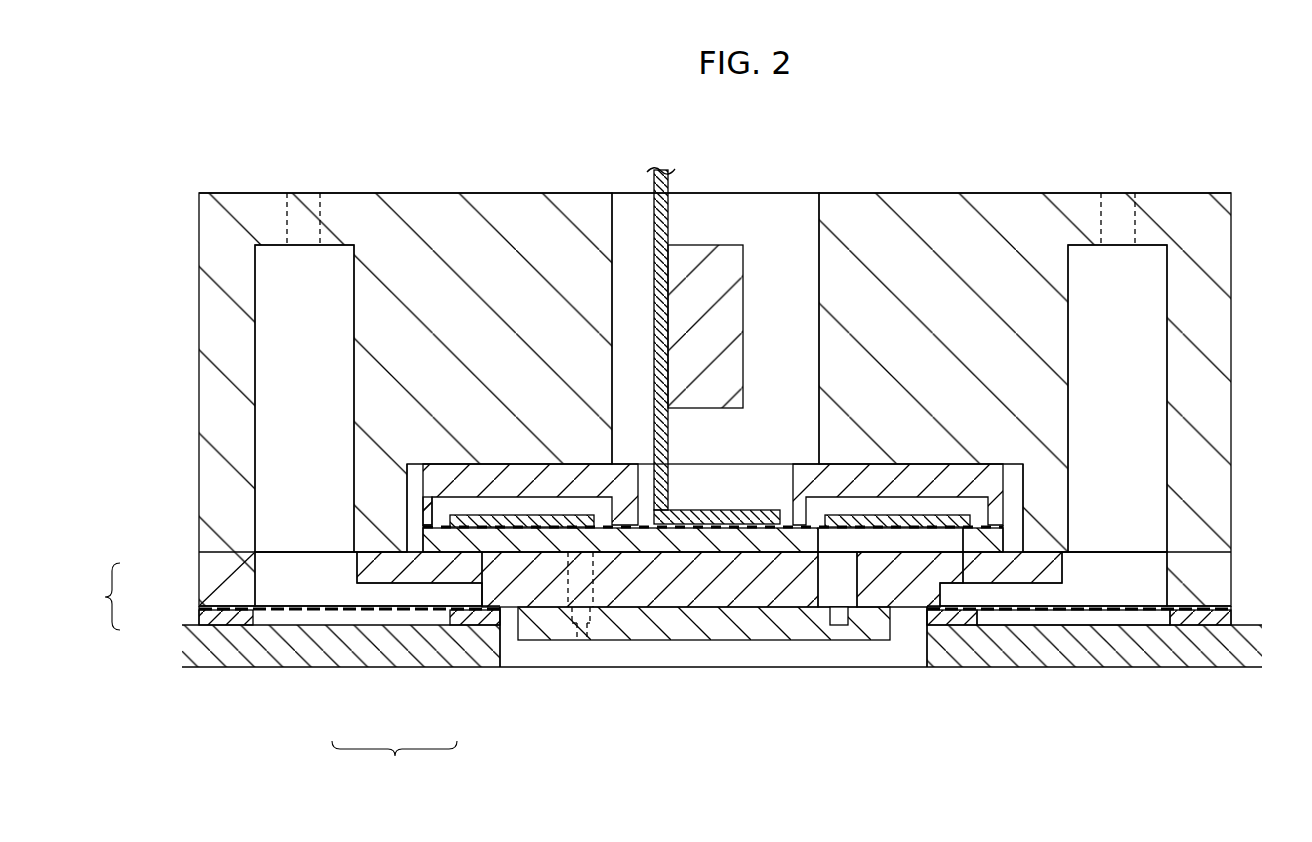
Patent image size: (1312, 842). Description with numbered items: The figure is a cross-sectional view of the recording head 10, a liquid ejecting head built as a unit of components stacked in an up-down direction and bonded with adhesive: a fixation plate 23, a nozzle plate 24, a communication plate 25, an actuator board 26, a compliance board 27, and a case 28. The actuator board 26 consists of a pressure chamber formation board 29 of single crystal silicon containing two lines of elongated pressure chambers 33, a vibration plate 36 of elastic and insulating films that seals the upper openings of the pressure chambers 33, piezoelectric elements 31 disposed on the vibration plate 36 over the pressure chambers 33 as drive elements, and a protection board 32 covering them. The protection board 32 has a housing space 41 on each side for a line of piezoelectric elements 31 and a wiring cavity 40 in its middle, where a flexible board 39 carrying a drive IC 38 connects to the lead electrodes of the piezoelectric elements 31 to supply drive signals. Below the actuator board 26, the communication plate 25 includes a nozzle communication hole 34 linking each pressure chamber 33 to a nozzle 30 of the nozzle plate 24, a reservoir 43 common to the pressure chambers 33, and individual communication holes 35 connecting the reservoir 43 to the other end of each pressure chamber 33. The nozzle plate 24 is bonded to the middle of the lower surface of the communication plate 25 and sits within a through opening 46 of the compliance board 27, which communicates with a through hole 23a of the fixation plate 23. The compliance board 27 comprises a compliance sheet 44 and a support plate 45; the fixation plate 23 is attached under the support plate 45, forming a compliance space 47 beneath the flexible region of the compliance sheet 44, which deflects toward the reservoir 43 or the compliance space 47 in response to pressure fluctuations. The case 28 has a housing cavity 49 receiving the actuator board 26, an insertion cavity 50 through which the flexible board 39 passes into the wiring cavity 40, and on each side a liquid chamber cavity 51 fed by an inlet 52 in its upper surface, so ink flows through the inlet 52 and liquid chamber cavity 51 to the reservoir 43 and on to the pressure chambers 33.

The recording head 10 is at (200, 181).
The fixation plate 23 is at (244, 655).
The through hole 23a is at (885, 655).
The nozzle plate 24 is at (639, 627).
The communication plate 25 is at (690, 590).
The actuator board 26 is at (394, 761).
The compliance board 27 is at (99, 596).
The case 28 is at (215, 323).
The pressure chamber formation board 29 is at (440, 538).
The nozzle 30 is at (839, 627).
The piezoelectric element 31 is at (497, 520).
The protection board 32 is at (441, 488).
The pressure chamber 33 is at (891, 540).
The nozzle communication hole 34 is at (835, 578).
The individual communication hole 35 is at (950, 573).
The vibration plate 36 is at (977, 530).
The drive IC 38 is at (725, 265).
The flexible board 39 is at (653, 267).
The wiring cavity 40 is at (717, 487).
The housing space 41 is at (477, 512).
The reservoir 43 is at (288, 577).
The compliance sheet 44 is at (200, 607).
The support plate 45 is at (212, 611).
The through opening 46 is at (507, 640).
The compliance space 47 is at (1135, 618).
The housing cavity 49 is at (1013, 487).
The insertion cavity 50 is at (787, 320).
The liquid chamber cavity 51 is at (300, 433).
The inlet 52 is at (287, 225).